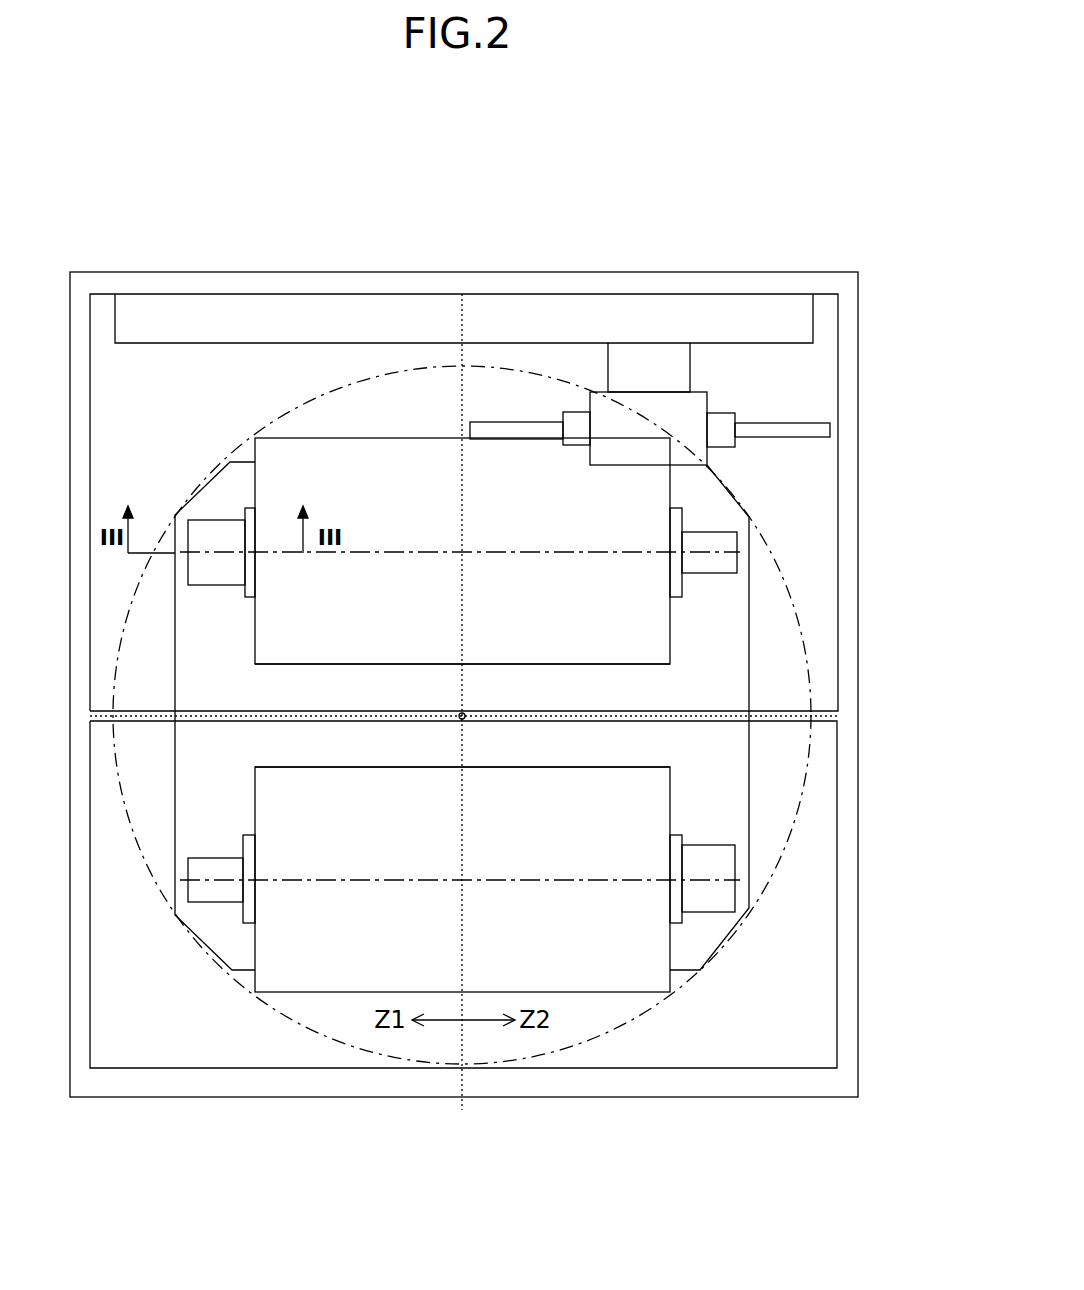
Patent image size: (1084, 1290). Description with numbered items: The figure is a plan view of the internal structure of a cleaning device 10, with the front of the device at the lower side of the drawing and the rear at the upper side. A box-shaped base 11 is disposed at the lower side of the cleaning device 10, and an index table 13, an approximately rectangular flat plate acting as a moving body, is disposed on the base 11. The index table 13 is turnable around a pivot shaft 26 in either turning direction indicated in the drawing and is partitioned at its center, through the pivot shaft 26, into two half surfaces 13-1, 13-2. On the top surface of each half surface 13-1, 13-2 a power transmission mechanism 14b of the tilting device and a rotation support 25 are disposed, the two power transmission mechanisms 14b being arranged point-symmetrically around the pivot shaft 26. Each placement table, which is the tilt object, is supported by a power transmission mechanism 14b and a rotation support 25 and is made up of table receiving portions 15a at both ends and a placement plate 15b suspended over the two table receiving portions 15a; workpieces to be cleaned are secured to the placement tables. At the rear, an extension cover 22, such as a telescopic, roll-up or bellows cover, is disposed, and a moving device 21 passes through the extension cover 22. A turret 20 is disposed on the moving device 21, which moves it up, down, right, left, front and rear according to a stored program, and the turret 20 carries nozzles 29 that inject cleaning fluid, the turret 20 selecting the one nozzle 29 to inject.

The cleaning device 10 is at (859, 239).
The base 11 is at (737, 1098).
The index table 13 is at (749, 677).
The half surface 13-1 is at (745, 763).
The half surface 13-2 is at (735, 615).
The power transmission mechanism 14b is at (215, 518).
The table receiving portion 15a is at (245, 600).
The placement plate 15b is at (300, 767).
The turret 20 is at (707, 400).
The moving device 21 is at (690, 365).
The extension cover 22 is at (410, 293).
The rotation support 25 is at (737, 540).
The pivot shaft 26 is at (465, 713).
The nozzle 29 is at (533, 420).